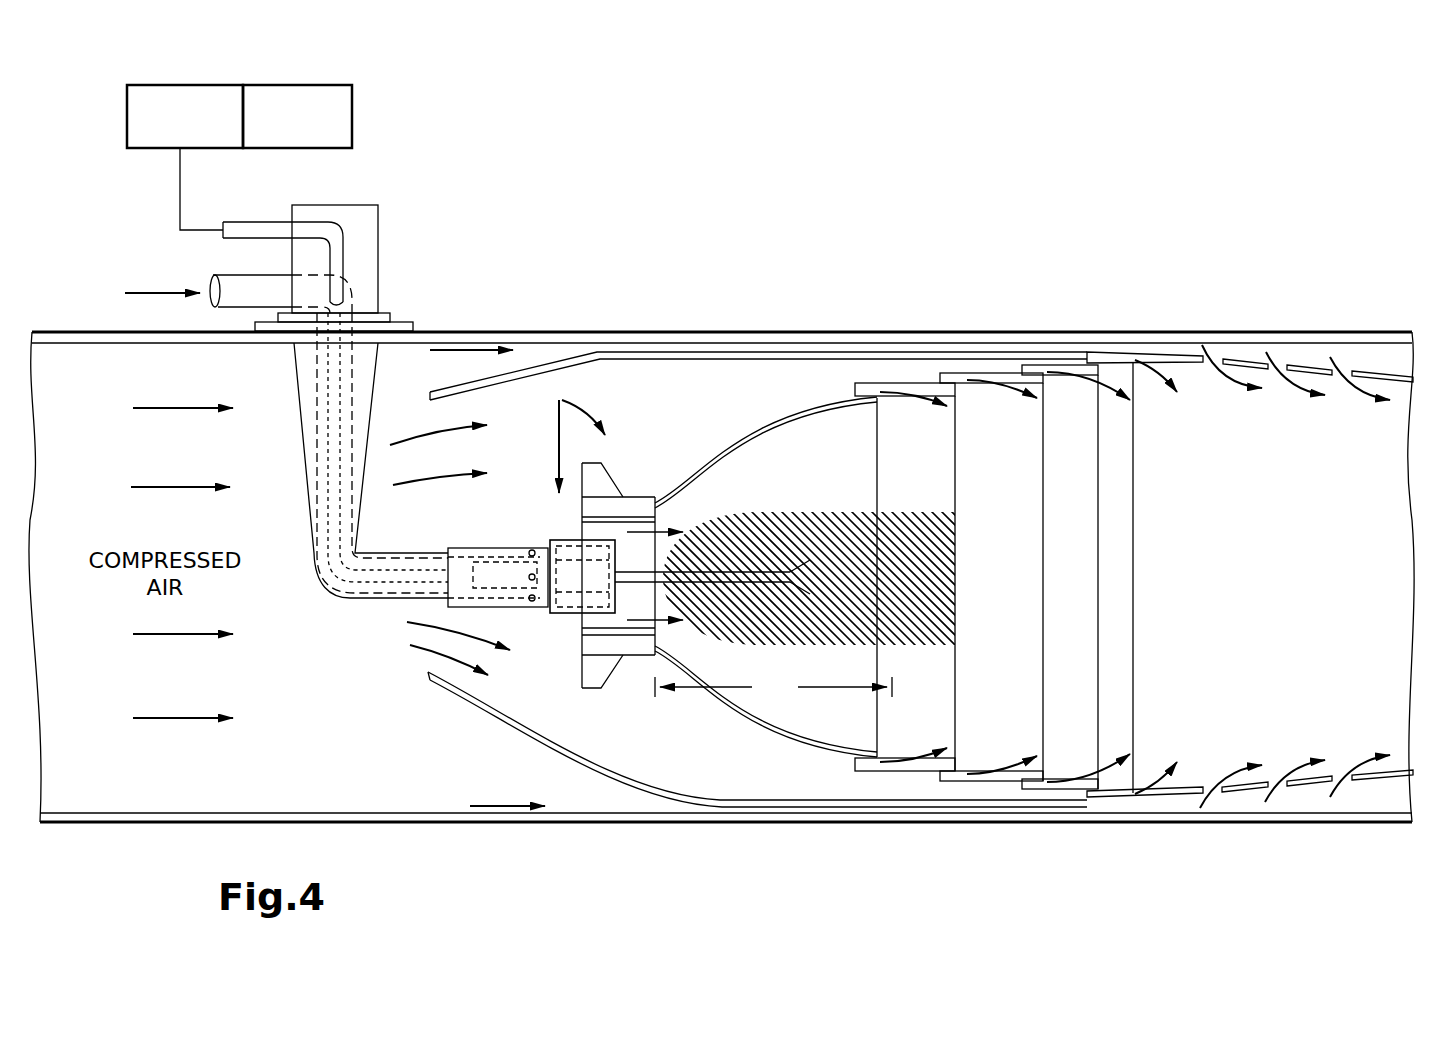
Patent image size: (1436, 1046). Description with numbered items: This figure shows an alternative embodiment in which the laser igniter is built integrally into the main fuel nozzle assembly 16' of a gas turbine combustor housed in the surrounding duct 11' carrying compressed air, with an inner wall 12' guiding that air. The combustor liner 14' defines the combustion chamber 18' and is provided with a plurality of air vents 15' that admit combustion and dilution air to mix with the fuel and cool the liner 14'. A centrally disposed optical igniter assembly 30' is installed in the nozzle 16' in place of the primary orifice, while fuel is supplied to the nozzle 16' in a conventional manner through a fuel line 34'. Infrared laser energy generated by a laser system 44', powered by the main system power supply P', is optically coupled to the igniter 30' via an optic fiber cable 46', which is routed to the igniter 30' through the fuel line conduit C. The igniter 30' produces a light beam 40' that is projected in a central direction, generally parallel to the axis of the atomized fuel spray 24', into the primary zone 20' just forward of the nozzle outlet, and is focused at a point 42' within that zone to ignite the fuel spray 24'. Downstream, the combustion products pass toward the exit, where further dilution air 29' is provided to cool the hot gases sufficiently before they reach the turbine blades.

The compressed air duct 11' is at (721, 552).
The upper inner duct wall 12' is at (758, 347).
The combustor liner 14' is at (766, 709).
The air vents 15' is at (766, 595).
The fuel nozzle assembly 16' is at (568, 434).
The combustion chamber 18' is at (1058, 577).
The primary zone 20' is at (773, 688).
The fuel spray 24' is at (905, 577).
The dilution air 29' is at (1250, 576).
The optical igniter assembly 30' is at (571, 605).
The fuel line 34' is at (238, 297).
The light beam 40' is at (712, 526).
The beam focal point 42' is at (808, 550).
The laser system 44' is at (207, 94).
The optic fiber cable 46' is at (224, 226).
The fuel line conduit C is at (293, 382).
The main system power supply P' is at (321, 100).